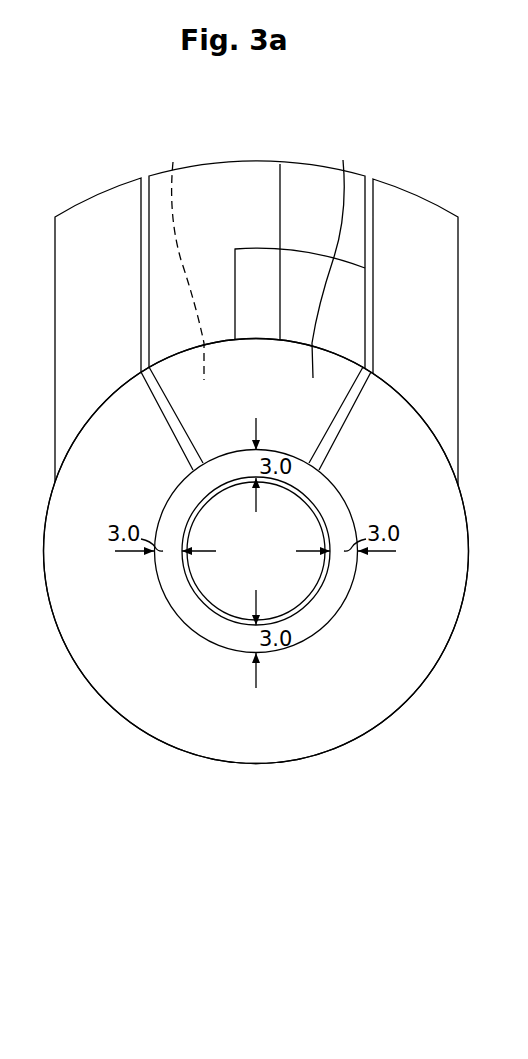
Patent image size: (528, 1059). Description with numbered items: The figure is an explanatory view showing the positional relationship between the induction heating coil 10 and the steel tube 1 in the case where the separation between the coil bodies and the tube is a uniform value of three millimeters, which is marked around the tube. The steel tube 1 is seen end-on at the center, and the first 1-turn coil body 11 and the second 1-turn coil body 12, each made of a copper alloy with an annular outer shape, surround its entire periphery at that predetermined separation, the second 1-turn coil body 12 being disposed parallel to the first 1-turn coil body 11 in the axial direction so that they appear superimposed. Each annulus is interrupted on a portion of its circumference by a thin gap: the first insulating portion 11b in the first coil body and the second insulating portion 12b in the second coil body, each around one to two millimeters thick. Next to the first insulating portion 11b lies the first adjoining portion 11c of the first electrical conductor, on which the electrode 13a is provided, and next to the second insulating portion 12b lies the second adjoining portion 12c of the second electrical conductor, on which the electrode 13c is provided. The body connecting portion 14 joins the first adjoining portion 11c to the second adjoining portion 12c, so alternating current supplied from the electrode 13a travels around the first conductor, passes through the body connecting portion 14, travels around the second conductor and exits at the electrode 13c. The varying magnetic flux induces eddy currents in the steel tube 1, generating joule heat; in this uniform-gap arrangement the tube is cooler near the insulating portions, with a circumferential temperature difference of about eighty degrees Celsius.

The induction heating coil 10 is at (390, 148).
The body connecting portion 14 is at (250, 175).
The electrode 13c is at (98, 207).
The electrode 13a is at (420, 208).
The second adjoining portion 12c is at (182, 257).
The first adjoining portion 11c is at (337, 257).
The second insulating portion 12b is at (177, 425).
The first insulating portion 11b is at (335, 427).
The first 1-turn coil body 11 is at (405, 700).
The second 1-turn coil body 12 is at (256, 551).
The steel tube 1 is at (323, 587).